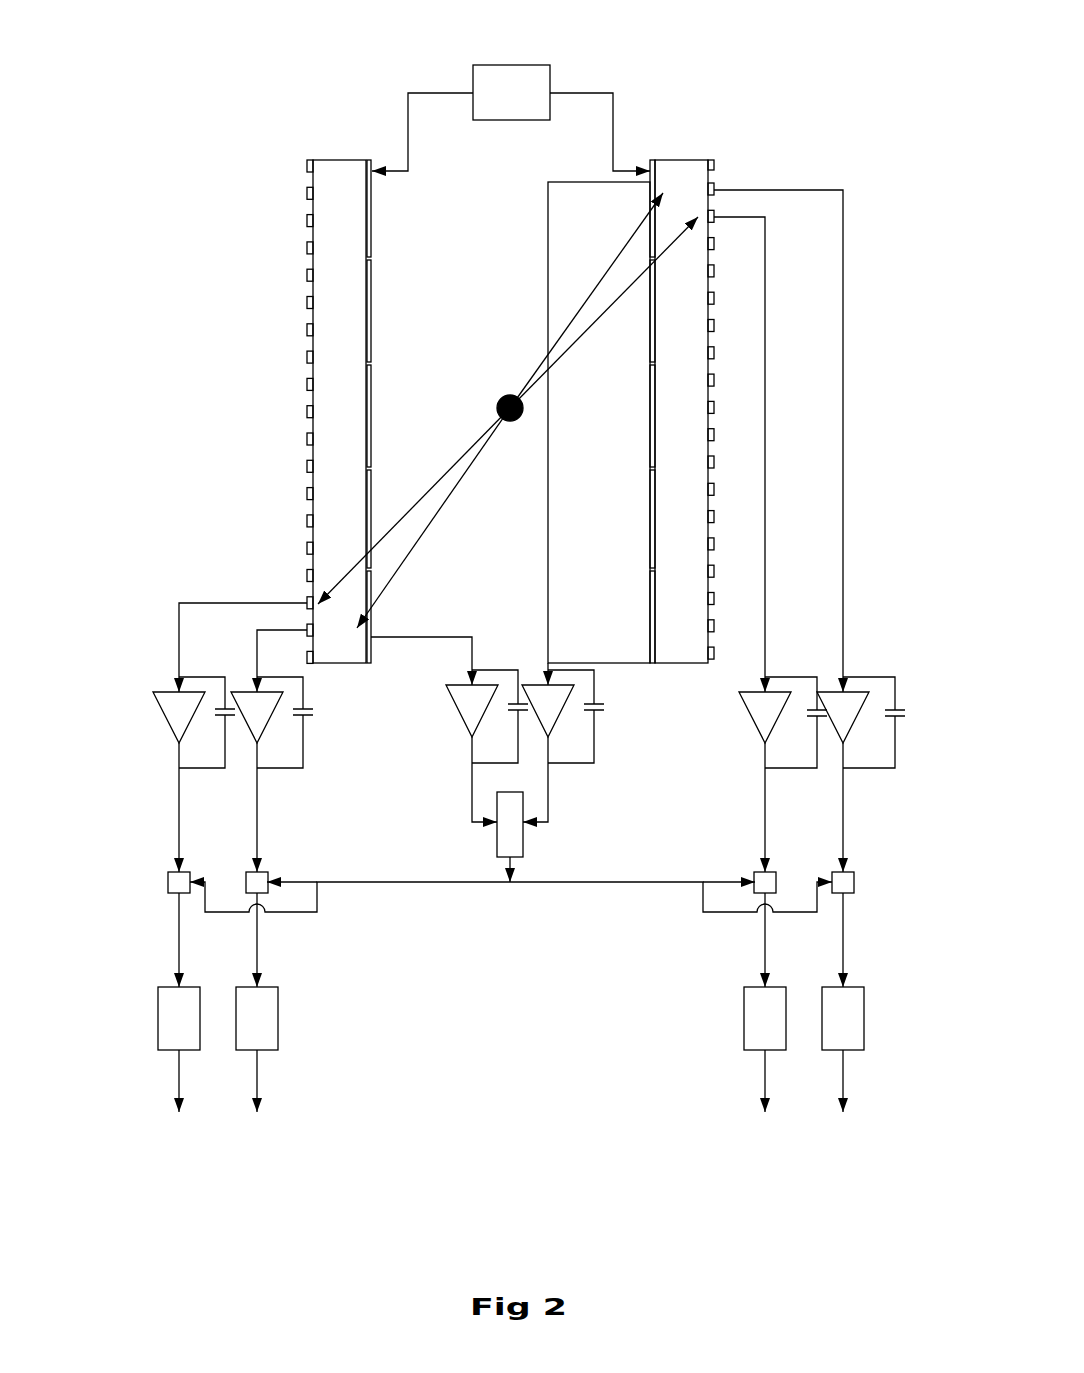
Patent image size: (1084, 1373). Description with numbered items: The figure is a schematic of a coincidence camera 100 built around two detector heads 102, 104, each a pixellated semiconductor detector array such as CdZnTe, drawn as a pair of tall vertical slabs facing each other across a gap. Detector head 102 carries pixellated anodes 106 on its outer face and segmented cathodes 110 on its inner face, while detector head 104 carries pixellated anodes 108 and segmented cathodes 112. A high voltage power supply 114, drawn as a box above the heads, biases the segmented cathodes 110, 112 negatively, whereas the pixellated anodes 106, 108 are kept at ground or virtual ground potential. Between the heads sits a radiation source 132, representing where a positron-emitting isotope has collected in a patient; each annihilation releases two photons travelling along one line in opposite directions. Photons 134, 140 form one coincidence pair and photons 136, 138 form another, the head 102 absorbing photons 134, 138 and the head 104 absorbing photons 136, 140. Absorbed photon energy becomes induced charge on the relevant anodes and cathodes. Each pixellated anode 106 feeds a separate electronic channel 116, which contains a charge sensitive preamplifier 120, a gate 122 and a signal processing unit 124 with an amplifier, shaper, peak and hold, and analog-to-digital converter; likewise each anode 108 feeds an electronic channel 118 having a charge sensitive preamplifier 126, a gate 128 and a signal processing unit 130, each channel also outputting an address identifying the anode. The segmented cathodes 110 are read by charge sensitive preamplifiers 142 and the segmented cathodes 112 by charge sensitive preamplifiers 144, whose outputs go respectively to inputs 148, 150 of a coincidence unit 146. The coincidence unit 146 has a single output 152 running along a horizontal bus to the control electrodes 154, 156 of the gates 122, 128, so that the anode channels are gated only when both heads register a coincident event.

The coincidence camera 100 is at (647, 110).
The detector head 102 is at (678, 172).
The detector head 104 is at (345, 173).
The pixellated anodes 106 is at (712, 168).
The pixellated anodes 108 is at (308, 273).
The segmented cathodes 110 is at (650, 402).
The segmented cathodes 112 is at (380, 407).
The high voltage power supply 114 is at (515, 78).
The electronic channel 116 is at (843, 345).
The electronic channel 118 is at (227, 602).
The charge sensitive preamplifier 120 is at (765, 707).
The gate 122 is at (845, 885).
The signal processing unit 124 is at (843, 1020).
The charge sensitive preamplifier 126 is at (173, 705).
The gate 128 is at (176, 880).
The signal processing unit 130 is at (168, 1023).
The radiation source 132 is at (525, 422).
The photon 134 is at (650, 222).
The photon 136 is at (403, 507).
The photon 138 is at (642, 276).
The photon 140 is at (457, 497).
The charge sensitive preamplifier 142 is at (545, 690).
The charge sensitive preamplifier 144 is at (467, 695).
The coincidence unit 146 is at (508, 847).
The input 148 is at (548, 790).
The input 150 is at (472, 776).
The output 152 is at (508, 867).
The control electrode 154 is at (668, 885).
The control electrode 156 is at (403, 885).